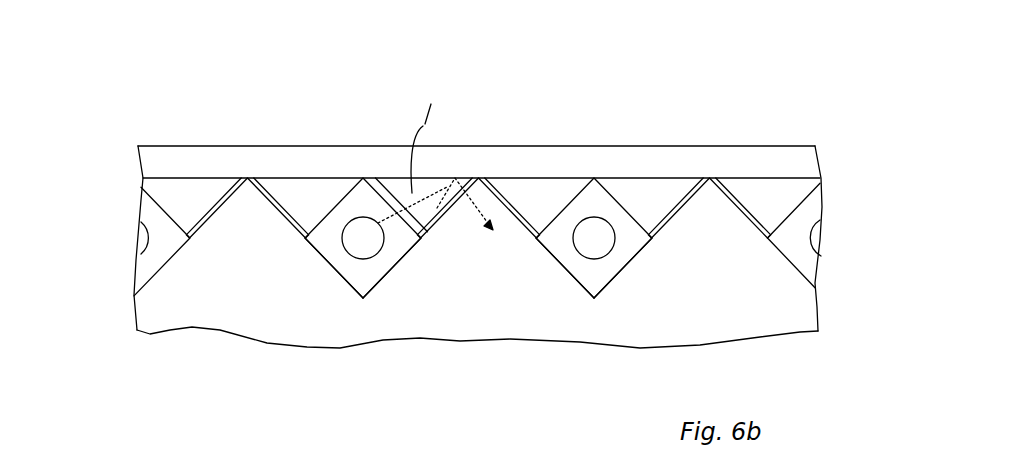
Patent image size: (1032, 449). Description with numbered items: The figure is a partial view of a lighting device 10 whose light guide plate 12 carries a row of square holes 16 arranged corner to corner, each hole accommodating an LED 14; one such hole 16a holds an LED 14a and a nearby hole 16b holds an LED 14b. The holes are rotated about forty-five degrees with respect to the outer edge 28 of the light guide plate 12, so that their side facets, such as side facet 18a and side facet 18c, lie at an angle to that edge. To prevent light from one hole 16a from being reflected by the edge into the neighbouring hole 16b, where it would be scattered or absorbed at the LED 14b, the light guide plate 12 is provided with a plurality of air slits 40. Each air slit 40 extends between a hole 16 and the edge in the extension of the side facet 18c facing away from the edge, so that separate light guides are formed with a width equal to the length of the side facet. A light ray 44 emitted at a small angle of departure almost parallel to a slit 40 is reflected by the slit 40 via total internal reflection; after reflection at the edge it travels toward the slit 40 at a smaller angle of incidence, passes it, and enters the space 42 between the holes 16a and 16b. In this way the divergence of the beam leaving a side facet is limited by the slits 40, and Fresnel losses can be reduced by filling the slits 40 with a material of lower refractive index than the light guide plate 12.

The lighting device 10 is at (836, 293).
The light guide plate 12 is at (783, 322).
The LED 14 is at (137, 238).
The LED 14a is at (325, 258).
The LED 14b is at (598, 232).
The hole 16 is at (160, 264).
The hole 16a is at (365, 273).
The hole 16b is at (608, 274).
The side facet 18a is at (428, 227).
The side facet 18c is at (397, 266).
The outer edge 28 is at (759, 162).
The air slit 40 is at (208, 221).
The space between the holes 42 is at (197, 188).
The light ray 44 is at (483, 186).